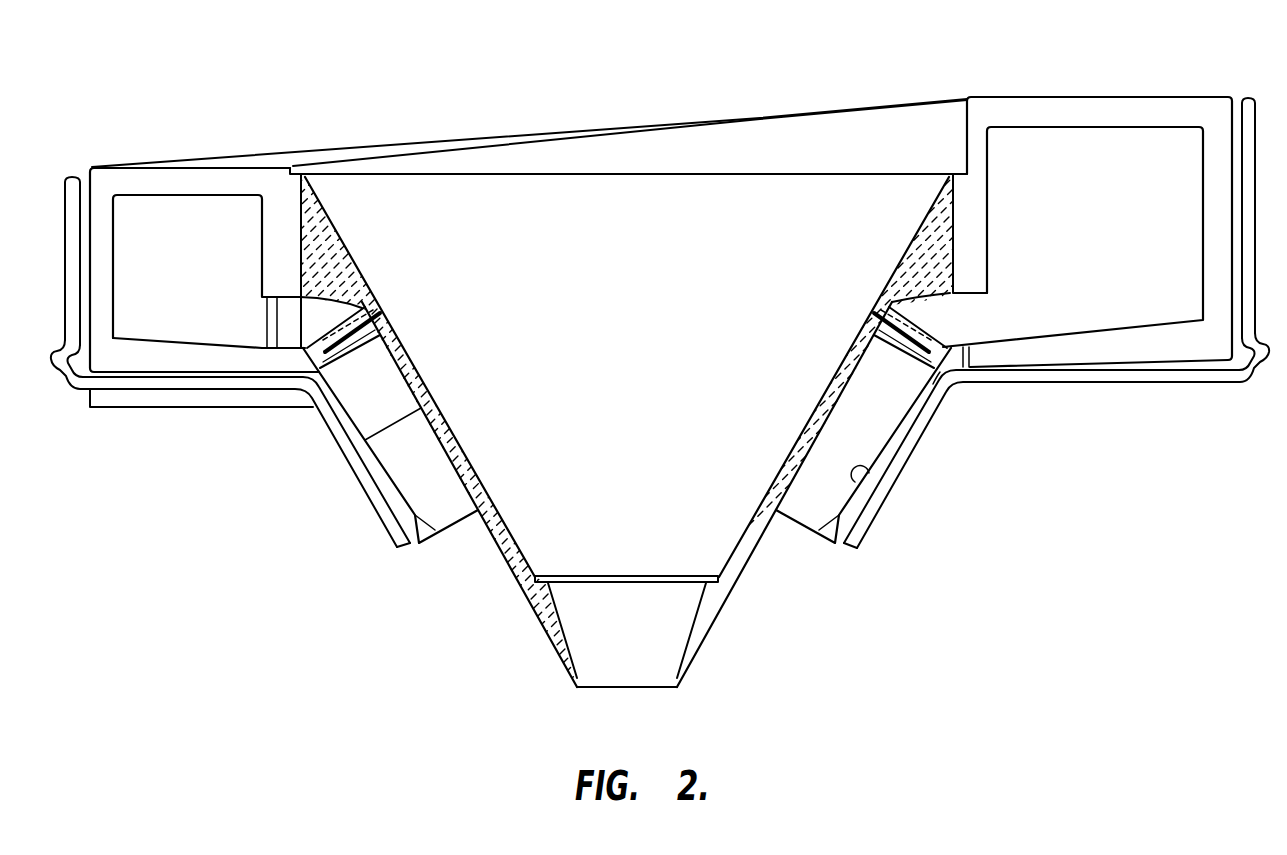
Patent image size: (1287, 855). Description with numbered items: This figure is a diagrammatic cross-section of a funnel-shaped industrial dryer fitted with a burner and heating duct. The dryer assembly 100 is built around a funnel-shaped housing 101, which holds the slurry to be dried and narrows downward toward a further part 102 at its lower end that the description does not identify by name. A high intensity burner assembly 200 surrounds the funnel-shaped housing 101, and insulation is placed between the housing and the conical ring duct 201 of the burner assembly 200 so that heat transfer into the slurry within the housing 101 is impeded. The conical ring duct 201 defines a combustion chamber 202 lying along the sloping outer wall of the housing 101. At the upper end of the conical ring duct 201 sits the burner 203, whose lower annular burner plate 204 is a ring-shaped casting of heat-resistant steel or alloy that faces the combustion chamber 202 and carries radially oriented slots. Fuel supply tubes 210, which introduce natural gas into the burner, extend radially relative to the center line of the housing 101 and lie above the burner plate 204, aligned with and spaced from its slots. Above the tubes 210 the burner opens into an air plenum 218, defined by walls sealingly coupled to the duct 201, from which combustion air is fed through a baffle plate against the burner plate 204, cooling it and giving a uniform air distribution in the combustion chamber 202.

The dryer assembly 100 is at (299, 72).
The funnel-shaped housing 101 is at (742, 576).
The spout outlet 102 is at (641, 688).
The high intensity burner assembly 200 is at (932, 451).
The conical ring duct 201 is at (866, 493).
The combustion chamber 202 is at (896, 411).
The burner 203 is at (887, 297).
The burner plate 204 is at (921, 392).
The fuel supply tubes 210 is at (385, 312).
The air plenum 218 is at (1005, 329).